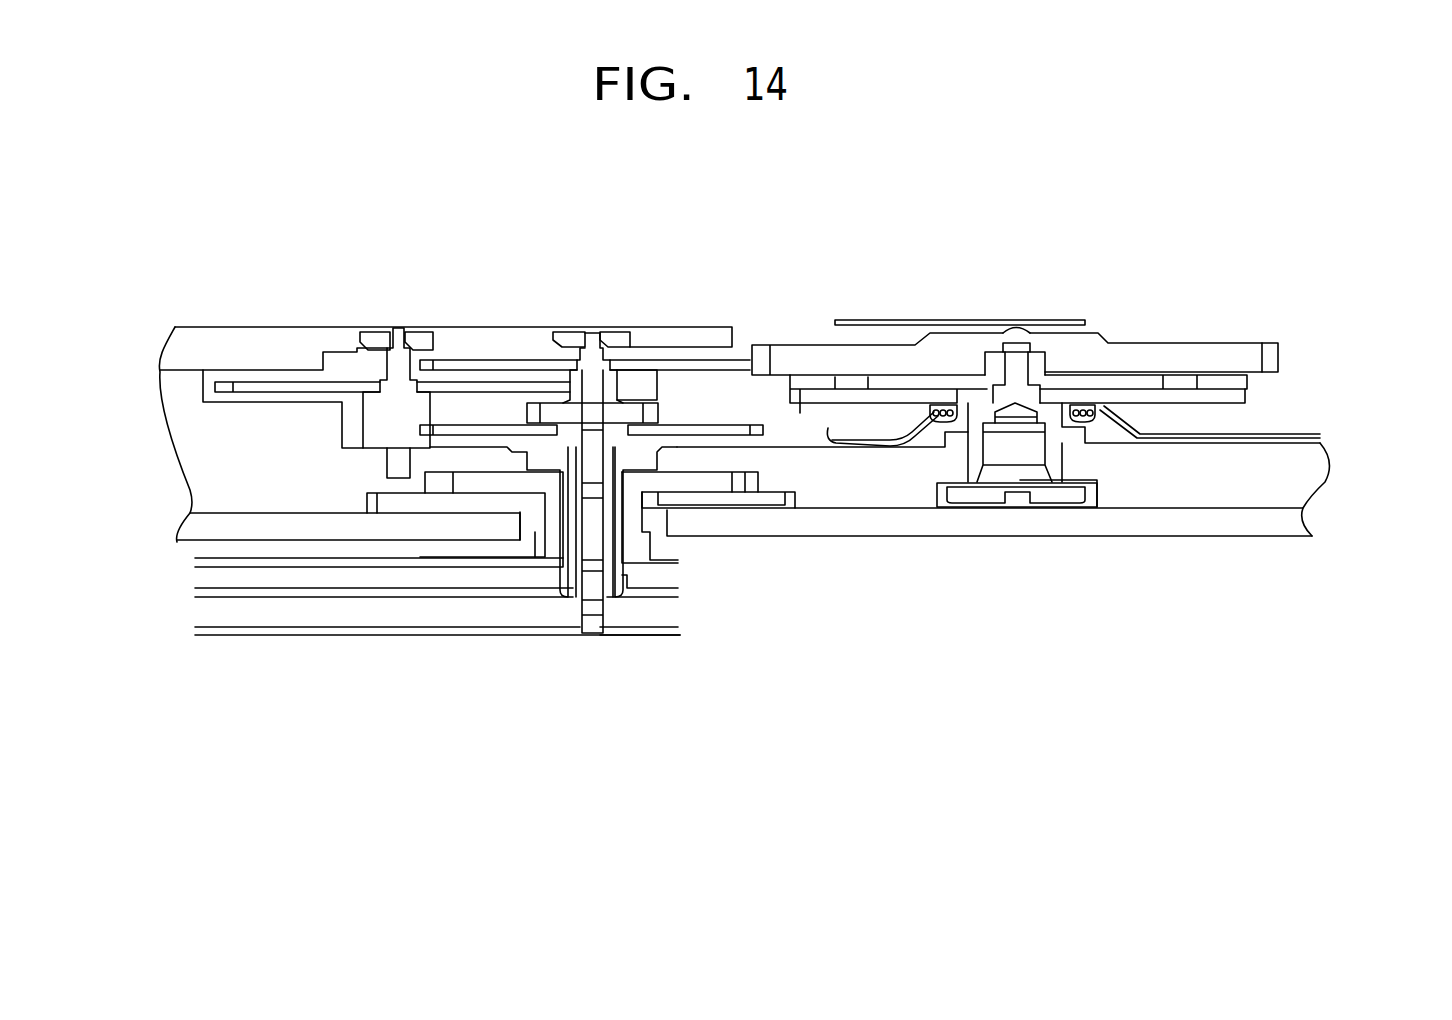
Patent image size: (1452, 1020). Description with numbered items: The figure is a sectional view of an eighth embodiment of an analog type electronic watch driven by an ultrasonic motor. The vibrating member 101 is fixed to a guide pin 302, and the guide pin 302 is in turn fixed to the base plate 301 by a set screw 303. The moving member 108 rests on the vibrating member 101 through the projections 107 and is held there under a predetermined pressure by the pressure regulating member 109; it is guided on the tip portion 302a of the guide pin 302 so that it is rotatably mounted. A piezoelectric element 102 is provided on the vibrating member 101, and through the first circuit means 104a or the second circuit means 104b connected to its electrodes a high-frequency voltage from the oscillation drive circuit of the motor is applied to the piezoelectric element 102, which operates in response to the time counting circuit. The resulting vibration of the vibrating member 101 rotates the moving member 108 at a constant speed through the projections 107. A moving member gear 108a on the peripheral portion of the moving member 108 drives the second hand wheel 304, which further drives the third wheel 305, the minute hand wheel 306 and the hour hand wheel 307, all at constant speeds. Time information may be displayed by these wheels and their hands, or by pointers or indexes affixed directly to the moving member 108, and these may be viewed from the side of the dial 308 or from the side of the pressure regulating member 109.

The vibrating member 101 is at (1212, 390).
The piezoelectric element 102 is at (1240, 404).
The first circuit means 104a is at (868, 443).
The second circuit means 104b is at (1227, 440).
The projections 107 is at (845, 385).
The moving member 108 is at (1182, 350).
The moving member gear 108a is at (1273, 352).
The pressure regulating member 109 is at (943, 318).
The base plate 301 is at (1302, 480).
The guide pin 302 is at (1020, 392).
The tip portion of guide pin 302a is at (1017, 368).
The set screw 303 is at (982, 493).
The second hand wheel 304 is at (470, 365).
The third wheel 305 is at (293, 387).
The minute hand wheel 306 is at (707, 427).
The hour hand wheel 307 is at (708, 483).
The dial 308 is at (1253, 525).